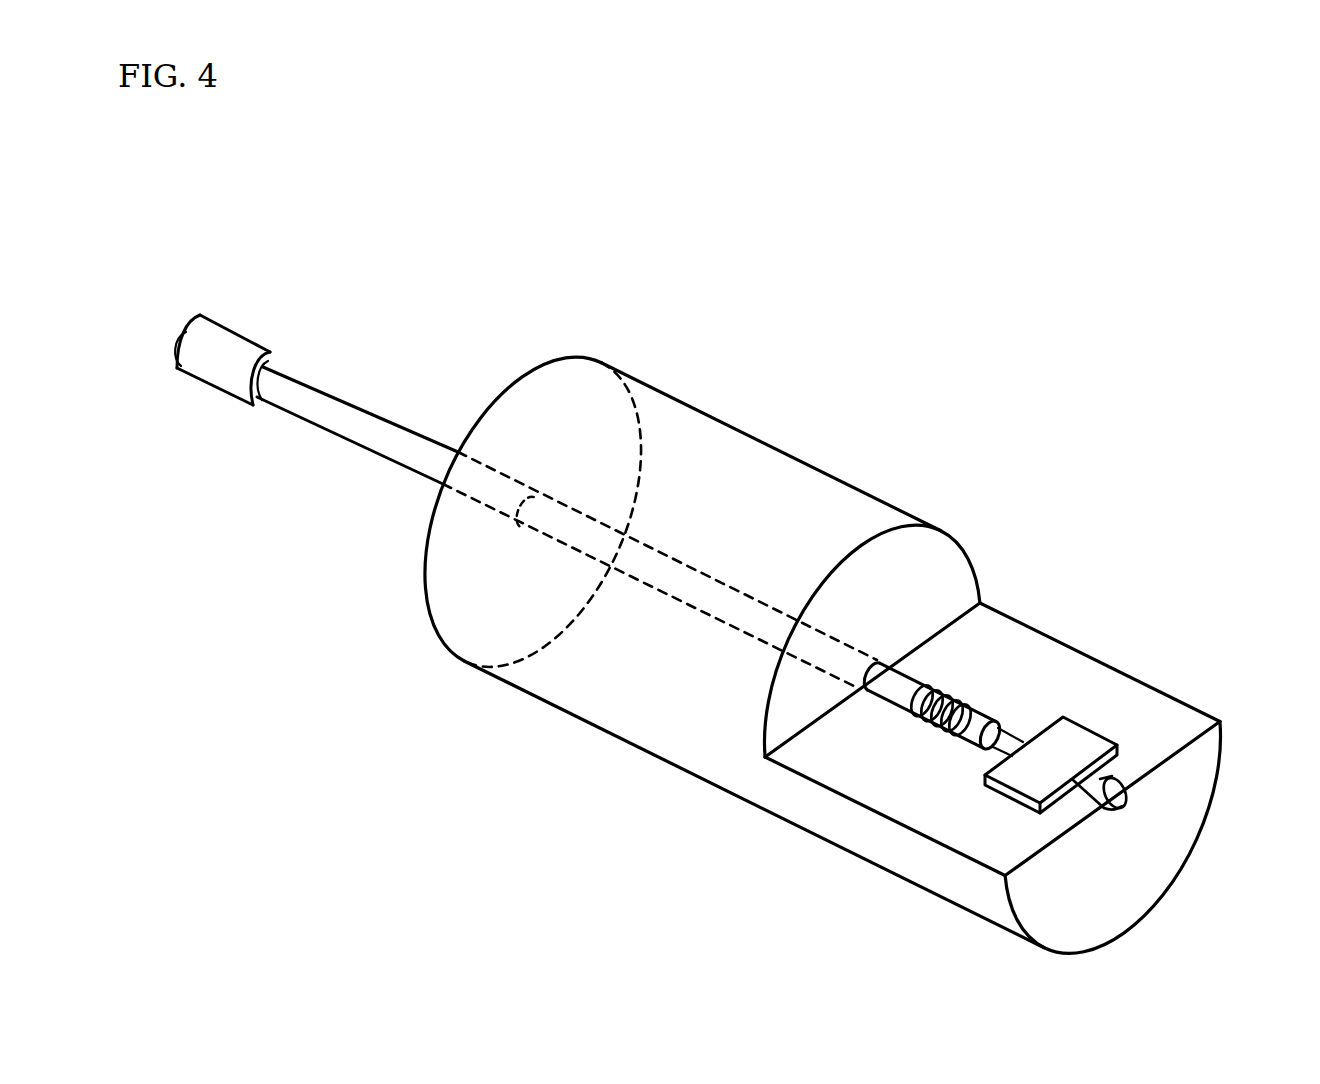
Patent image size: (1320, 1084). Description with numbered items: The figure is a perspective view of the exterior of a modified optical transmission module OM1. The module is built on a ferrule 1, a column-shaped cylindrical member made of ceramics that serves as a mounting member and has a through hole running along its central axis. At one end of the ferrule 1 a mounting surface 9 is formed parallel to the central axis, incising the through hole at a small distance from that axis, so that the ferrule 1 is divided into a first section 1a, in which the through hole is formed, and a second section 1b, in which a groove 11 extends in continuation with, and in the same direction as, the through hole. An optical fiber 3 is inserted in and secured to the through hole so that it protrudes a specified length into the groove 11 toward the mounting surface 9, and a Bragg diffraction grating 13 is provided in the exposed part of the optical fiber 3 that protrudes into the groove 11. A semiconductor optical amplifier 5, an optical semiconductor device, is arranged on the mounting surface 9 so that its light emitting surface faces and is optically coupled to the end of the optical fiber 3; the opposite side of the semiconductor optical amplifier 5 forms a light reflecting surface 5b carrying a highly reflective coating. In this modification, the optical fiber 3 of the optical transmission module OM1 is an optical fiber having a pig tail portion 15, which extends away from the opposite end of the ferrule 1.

The optical transmission module OM1 is at (1113, 433).
The ferrule 1 is at (430, 620).
The first section 1a is at (778, 477).
The second section 1b is at (908, 863).
The optical fiber 3 is at (897, 693).
The semiconductor optical amplifier 5 is at (1090, 752).
The light reflecting surface 5b is at (1104, 809).
The mounting surface 9 is at (1085, 682).
The groove 11 is at (1130, 779).
The Bragg diffraction grating 13 is at (981, 709).
The pig tail portion 15 is at (465, 402).